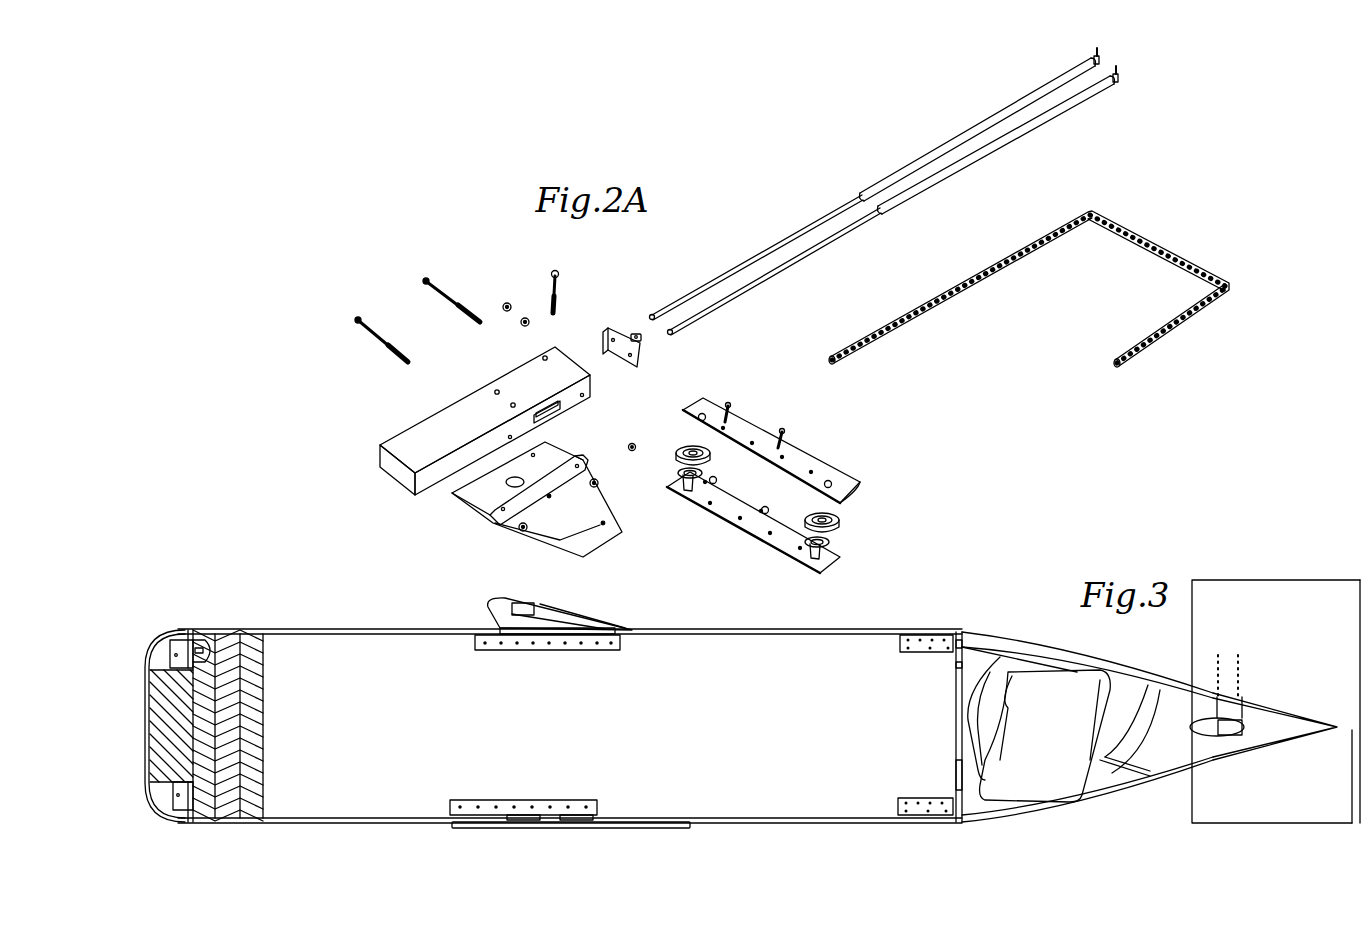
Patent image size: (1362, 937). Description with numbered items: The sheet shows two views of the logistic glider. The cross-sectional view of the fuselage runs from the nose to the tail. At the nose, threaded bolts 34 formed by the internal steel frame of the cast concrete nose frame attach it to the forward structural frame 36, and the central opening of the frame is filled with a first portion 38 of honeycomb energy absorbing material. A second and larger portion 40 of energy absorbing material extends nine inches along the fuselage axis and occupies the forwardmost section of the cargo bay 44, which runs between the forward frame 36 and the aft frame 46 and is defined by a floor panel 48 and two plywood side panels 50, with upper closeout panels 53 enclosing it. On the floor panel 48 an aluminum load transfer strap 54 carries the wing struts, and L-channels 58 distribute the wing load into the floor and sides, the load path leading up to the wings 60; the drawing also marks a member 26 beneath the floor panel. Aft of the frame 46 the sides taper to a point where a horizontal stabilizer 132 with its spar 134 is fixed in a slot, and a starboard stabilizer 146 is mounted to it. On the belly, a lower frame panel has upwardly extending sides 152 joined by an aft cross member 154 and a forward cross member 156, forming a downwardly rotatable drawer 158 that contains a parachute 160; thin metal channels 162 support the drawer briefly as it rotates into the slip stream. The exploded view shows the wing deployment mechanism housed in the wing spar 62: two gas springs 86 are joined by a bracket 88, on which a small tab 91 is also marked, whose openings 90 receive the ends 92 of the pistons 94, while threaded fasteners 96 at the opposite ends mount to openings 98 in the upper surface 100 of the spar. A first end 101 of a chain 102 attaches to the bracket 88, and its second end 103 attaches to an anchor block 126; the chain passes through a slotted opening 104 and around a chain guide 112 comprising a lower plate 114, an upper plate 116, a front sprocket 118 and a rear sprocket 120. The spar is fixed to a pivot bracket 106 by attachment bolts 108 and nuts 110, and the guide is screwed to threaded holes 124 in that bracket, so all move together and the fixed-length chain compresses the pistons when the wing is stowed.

In FIG. 3, the bottom plate 26 is at (620, 830).
In FIG. 3, the threaded bolts 34 is at (201, 648).
In FIG. 3, the forward structural frame 36 is at (190, 824).
In FIG. 3, the first portion of energy absorbing material 38 is at (165, 660).
In FIG. 3, the second portion of energy absorbing material 40 is at (266, 693).
In FIG. 3, the cargo bay 44 is at (742, 815).
In FIG. 3, the aft frame 46 is at (954, 712).
In FIG. 3, the floor panel 48 is at (340, 826).
In FIG. 3, the side panels 50 is at (553, 701).
In FIG. 3, the upper closeout panels 53 is at (375, 637).
In FIG. 3, the load transfer strap 54 is at (521, 813).
In FIG. 3, the L-channels 58 is at (471, 798).
In FIG. 3, the wings 60 is at (590, 608).
In FIG. 2A, the wing spar 62 is at (498, 421).
In FIG. 2A, the gas springs 86 is at (987, 117).
In FIG. 2A, the bracket 88 is at (633, 345).
In FIG. 2A, the openings 90 is at (629, 358).
In FIG. 2A, the tab 91 is at (639, 342).
In FIG. 2A, the ends of the pistons 92 is at (651, 314).
In FIG. 2A, the pistons 94 is at (797, 232).
In FIG. 2A, the threaded fasteners 96 is at (1120, 72).
In FIG. 2A, the openings 98 is at (513, 403).
In FIG. 2A, the upper surface of the wing spar 100 is at (499, 421).
In FIG. 2A, the first end of the chain 101 is at (834, 354).
In FIG. 2A, the chain 102 is at (1015, 317).
In FIG. 2A, the second end of the chain 103 is at (1120, 368).
In FIG. 2A, the slotted opening 104 is at (556, 412).
In FIG. 2A, the pivot bracket 106 is at (470, 508).
In FIG. 2A, the attachment bolts 108 is at (378, 338).
In FIG. 2A, the nuts 110 is at (598, 485).
In FIG. 2A, the chain guide 112 is at (795, 474).
In FIG. 2A, the lower plate 114 is at (752, 534).
In FIG. 2A, the upper plate 116 is at (836, 458).
In FIG. 2A, the front sprocket 118 is at (842, 518).
In FIG. 2A, the rear sprocket 120 is at (686, 445).
In FIG. 2A, the threaded holes 124 is at (731, 402).
In FIG. 2A, the anchor block 126 is at (550, 494).
In FIG. 3, the horizontal stabilizer 132 is at (1272, 720).
In FIG. 3, the horizontal stabilizer spar 134 is at (1232, 718).
In FIG. 3, the starboard stabilizer 146 is at (1282, 578).
In FIG. 3, the upwardly extending sides 152 is at (1140, 720).
In FIG. 3, the aft cross member 154 is at (1112, 715).
In FIG. 3, the forward cross member 156 is at (970, 770).
In FIG. 3, the downwardly rotatable drawer 158 is at (1155, 726).
In FIG. 3, the parachute 160 is at (1042, 680).
In FIG. 3, the thin metal channels 162 is at (1152, 780).